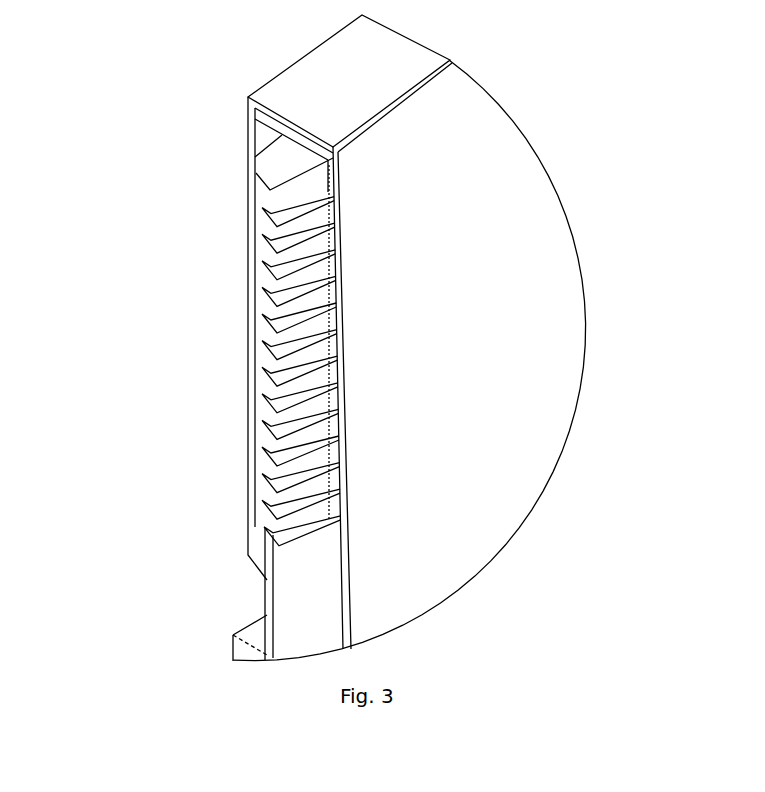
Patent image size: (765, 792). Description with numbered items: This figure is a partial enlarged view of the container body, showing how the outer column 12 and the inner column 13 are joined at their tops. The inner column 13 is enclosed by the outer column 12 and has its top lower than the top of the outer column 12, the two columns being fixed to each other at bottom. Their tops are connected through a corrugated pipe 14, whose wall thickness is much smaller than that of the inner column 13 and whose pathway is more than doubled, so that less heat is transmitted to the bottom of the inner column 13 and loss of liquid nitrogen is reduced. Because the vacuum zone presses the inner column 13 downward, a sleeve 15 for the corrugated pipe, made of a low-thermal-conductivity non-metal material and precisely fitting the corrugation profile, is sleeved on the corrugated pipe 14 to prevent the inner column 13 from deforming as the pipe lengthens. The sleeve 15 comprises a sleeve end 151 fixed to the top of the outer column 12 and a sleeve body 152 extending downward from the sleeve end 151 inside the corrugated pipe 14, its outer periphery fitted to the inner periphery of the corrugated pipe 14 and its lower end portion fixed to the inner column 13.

The outer column 12 is at (348, 415).
The inner column 13 is at (267, 615).
The corrugated pipe 14 is at (320, 307).
The sleeve for the corrugated pipe 15 is at (248, 270).
The sleeve end 151 is at (318, 80).
The sleeve body 152 is at (257, 417).